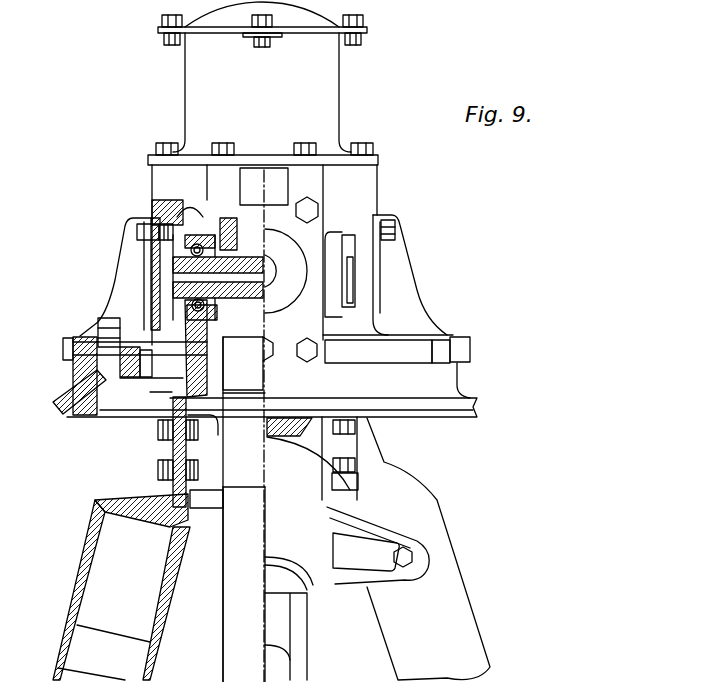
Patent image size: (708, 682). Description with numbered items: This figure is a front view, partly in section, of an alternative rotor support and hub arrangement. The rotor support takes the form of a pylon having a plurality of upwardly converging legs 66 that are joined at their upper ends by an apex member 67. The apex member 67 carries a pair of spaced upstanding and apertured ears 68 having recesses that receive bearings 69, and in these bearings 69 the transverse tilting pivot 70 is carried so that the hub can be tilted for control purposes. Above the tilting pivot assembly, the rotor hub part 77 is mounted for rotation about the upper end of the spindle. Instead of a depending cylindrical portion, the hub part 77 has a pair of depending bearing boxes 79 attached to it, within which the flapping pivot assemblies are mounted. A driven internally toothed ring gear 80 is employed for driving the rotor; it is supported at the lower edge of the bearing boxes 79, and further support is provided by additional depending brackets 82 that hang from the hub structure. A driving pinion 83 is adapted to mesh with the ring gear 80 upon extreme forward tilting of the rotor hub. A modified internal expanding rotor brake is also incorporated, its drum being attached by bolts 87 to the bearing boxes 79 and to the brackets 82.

The legs 66 is at (80, 596).
The apex member 67 is at (208, 483).
The ears 68 is at (173, 390).
The bearings 69 is at (190, 252).
The transverse tilting pivot 70 is at (278, 300).
The rotor hub part 77 is at (333, 90).
The bearing boxes 79 is at (310, 226).
The ring gear 80 is at (67, 413).
The depending brackets 82 is at (143, 270).
The driving pinion 83 is at (310, 435).
The bolts 87 is at (98, 330).